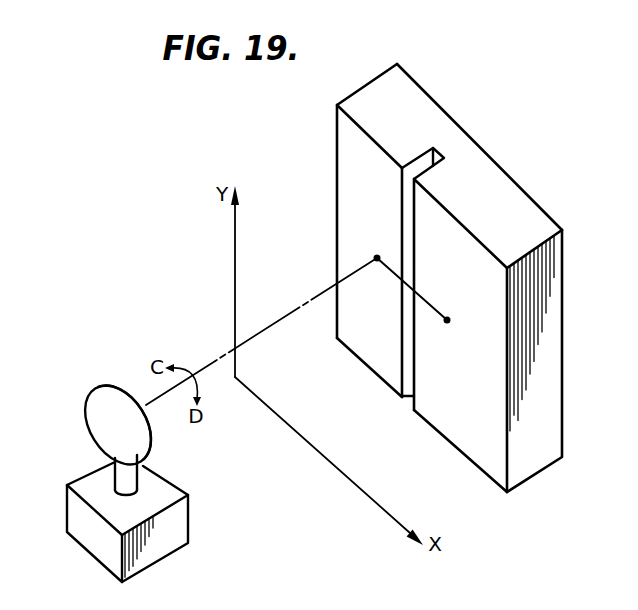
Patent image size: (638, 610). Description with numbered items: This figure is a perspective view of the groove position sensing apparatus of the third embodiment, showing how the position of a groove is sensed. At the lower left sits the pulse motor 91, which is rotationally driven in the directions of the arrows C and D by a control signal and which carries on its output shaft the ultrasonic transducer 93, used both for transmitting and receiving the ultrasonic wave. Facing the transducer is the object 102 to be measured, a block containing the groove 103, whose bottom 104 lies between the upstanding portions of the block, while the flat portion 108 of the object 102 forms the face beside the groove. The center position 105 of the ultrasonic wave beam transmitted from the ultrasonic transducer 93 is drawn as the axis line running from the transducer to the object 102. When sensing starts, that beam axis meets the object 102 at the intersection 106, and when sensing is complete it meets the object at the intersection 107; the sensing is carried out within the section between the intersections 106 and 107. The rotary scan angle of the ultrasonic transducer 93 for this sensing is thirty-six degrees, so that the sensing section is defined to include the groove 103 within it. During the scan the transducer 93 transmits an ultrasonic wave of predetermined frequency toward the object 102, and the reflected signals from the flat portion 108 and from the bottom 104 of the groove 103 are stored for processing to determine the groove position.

The pulse motor 91 is at (177, 523).
The ultrasonic transducer 93 is at (98, 410).
The object to be measured 102 is at (527, 212).
The groove 103 is at (408, 247).
The bottom of the groove 104 is at (443, 156).
The center position of the ultrasonic wave beam 105 is at (250, 337).
The intersection at sensing start 106 is at (374, 257).
The intersection at sensing completion 107 is at (450, 320).
The flat portion 108 is at (489, 441).